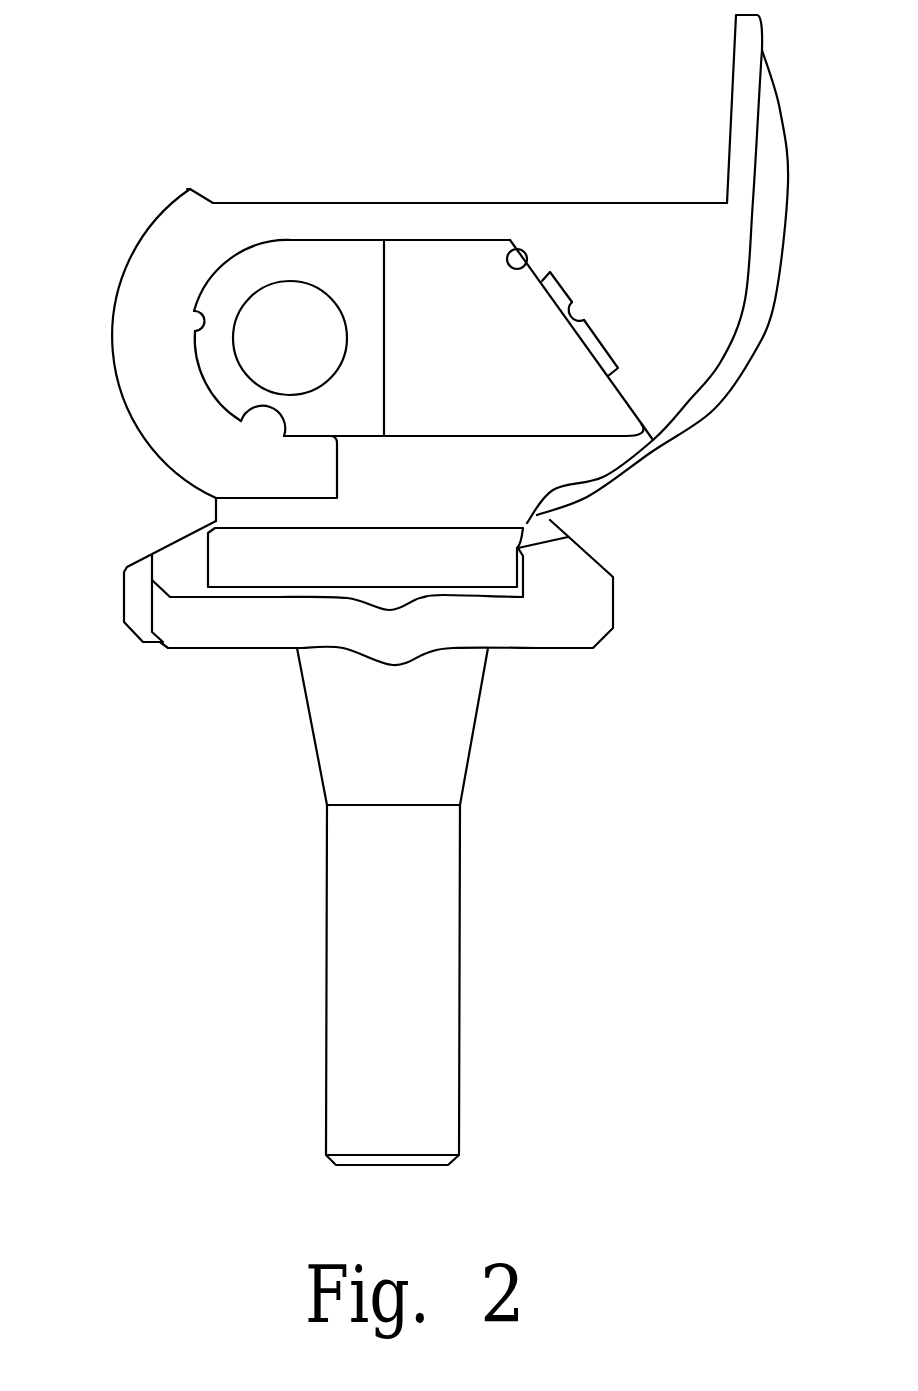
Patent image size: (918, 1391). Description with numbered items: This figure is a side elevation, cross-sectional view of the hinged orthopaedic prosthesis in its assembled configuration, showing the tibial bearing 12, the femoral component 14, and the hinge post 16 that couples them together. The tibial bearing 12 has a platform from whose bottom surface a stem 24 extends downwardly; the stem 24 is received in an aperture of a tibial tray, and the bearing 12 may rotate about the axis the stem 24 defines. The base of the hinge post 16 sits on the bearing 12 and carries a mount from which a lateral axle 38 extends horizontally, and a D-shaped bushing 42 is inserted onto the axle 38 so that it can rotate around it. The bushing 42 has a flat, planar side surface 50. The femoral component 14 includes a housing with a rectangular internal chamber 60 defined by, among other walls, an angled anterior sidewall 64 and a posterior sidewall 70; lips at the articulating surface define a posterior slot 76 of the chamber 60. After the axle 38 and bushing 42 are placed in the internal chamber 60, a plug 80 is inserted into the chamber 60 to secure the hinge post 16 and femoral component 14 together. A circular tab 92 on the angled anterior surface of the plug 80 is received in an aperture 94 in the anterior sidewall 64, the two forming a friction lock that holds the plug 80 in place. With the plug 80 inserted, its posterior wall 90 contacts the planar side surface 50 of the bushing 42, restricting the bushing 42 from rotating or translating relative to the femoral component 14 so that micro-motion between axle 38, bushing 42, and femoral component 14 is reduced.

The tibial bearing 12 is at (597, 598).
The femoral component 14 is at (738, 108).
The hinge post 16 is at (252, 563).
The stem 24 is at (460, 1005).
The lateral axle 38 is at (275, 300).
The bushing 42 is at (320, 257).
The planar side surface 50 is at (393, 263).
The internal chamber 60 is at (411, 441).
The anterior sidewall 64 is at (537, 270).
The posterior sidewall 70 is at (193, 307).
The posterior slot 76 is at (240, 420).
The plug 80 is at (460, 267).
The posterior wall 90 is at (378, 390).
The tab 92 is at (610, 368).
The aperture 94 is at (587, 317).